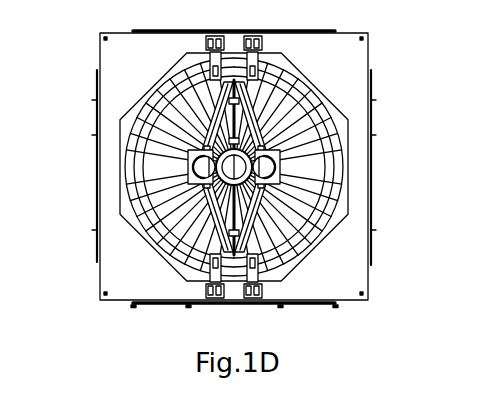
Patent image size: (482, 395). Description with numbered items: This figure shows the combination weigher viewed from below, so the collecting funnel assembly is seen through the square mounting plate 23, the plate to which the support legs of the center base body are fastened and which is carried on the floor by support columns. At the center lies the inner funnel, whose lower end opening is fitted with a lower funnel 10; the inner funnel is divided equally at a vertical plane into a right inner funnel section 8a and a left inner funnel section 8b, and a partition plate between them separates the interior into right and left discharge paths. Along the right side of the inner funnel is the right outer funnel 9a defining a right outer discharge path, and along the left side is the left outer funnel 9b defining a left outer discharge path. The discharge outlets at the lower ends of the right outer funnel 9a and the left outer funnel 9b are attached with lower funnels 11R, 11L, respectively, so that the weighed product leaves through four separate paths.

The mounting plate 23 is at (370, 42).
The right outer funnel 9a is at (318, 113).
The left outer funnel 9b is at (150, 113).
The lower funnel 11L is at (190, 150).
The lower funnel 11R is at (278, 150).
The lower funnel 10 is at (270, 222).
The right inner funnel section 8a is at (248, 220).
The left inner funnel section 8b is at (220, 222).